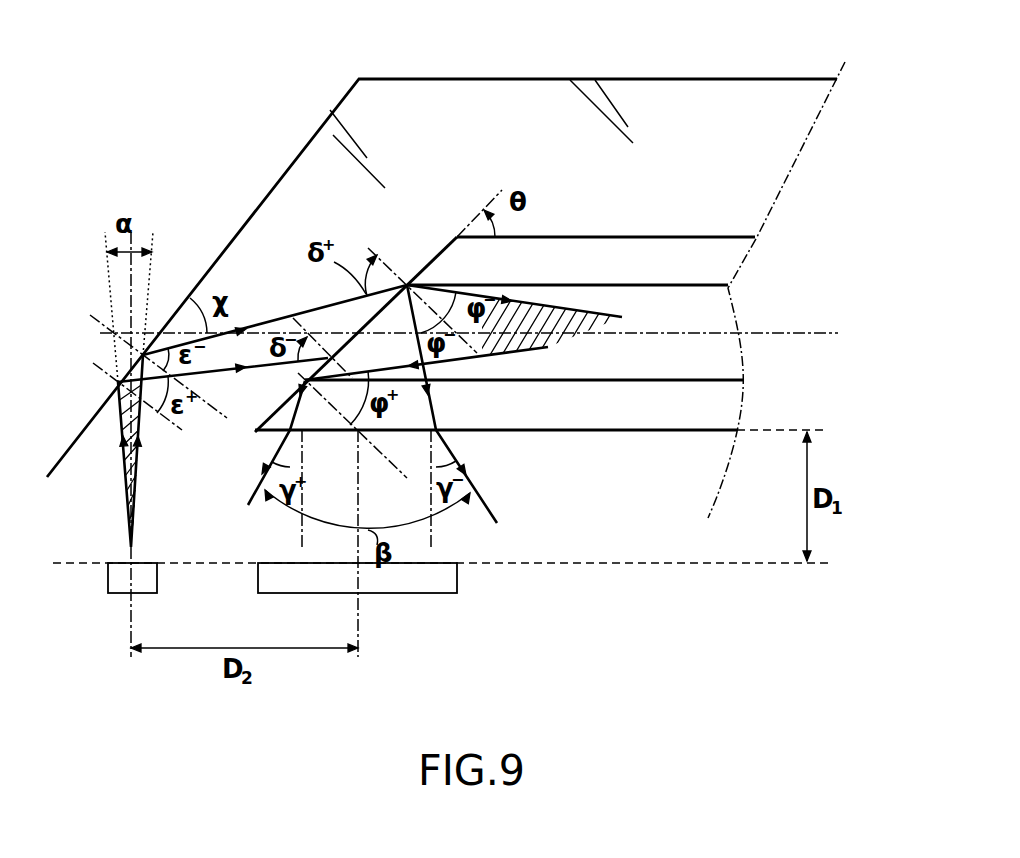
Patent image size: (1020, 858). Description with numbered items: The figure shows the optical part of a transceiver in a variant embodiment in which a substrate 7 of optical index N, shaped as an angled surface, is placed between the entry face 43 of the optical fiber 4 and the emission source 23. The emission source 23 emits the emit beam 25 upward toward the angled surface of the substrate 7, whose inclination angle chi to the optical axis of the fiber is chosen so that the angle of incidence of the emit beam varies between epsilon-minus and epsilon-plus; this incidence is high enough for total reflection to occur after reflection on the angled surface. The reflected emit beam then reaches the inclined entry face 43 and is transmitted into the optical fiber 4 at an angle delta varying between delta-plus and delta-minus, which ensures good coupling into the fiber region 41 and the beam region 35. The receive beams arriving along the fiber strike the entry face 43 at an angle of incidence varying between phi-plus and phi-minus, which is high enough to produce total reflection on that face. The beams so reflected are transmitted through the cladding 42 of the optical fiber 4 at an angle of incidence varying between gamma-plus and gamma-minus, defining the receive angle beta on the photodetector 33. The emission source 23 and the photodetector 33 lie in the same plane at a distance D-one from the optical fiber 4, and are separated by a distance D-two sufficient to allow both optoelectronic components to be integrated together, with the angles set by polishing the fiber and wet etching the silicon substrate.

The substrate 7 is at (658, 108).
The optical fiber 4 is at (677, 226).
The upper portion of slab 41 is at (700, 317).
The cladding 42 is at (645, 413).
The entry face 43 is at (433, 253).
The light beam region inside slab 35 is at (578, 313).
The emit beam 25 is at (141, 461).
The emission source 23 is at (117, 583).
The photodetector 33 is at (438, 582).